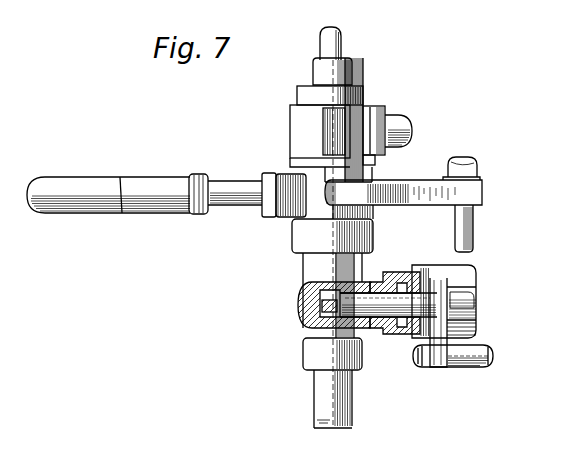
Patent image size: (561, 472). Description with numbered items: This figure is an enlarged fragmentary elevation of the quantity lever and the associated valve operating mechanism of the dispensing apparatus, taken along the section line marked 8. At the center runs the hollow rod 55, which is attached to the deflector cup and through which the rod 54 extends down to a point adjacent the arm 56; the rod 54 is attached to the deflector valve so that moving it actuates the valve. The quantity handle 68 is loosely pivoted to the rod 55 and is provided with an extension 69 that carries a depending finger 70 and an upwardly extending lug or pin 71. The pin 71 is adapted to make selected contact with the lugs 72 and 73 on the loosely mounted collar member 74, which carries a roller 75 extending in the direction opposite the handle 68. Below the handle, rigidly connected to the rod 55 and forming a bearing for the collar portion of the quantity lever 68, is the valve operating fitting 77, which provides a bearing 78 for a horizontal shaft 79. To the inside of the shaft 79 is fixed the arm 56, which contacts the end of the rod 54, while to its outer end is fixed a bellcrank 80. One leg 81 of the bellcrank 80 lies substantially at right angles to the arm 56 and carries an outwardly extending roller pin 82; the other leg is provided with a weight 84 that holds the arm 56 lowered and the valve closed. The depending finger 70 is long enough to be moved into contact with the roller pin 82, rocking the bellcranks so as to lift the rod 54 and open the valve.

The section line / shaft 8 is at (350, 13).
The rod 54 is at (326, 40).
The hollow rod 55 is at (349, 71).
The arm 56 is at (300, 296).
The quantity handle 68 is at (134, 207).
The extension 69 is at (405, 198).
The depending finger 70 is at (475, 231).
The lug or pin 71 is at (372, 161).
The lug 72 is at (333, 128).
The lug 73 is at (380, 108).
The collar member 74 is at (302, 117).
The roller 75 is at (400, 124).
The valve operating fitting 77 is at (300, 242).
The bearing 78 is at (369, 327).
The horizontal shaft 79 is at (375, 278).
The bellcrank 80 is at (462, 304).
The leg 81 is at (462, 327).
The roller pin 82 is at (464, 363).
The weight 84 is at (466, 283).